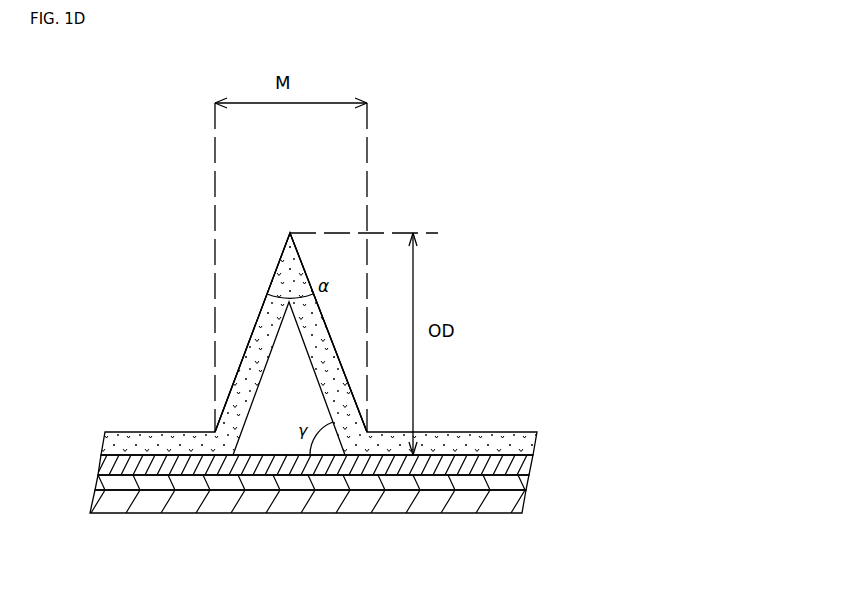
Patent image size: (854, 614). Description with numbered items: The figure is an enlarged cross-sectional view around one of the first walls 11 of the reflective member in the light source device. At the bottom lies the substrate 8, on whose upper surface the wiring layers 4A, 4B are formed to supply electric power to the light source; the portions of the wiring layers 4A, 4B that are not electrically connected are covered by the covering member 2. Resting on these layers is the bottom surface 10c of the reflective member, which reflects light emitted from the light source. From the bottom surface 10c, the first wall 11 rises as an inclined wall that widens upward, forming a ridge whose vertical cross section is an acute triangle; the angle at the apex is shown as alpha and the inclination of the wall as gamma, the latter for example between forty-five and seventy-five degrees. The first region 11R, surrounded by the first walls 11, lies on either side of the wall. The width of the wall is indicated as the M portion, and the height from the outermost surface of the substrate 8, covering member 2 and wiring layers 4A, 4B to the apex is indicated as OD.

The bottom surface 10c is at (190, 432).
The first wall 11 is at (243, 355).
The first region 11R is at (175, 317).
The covering member 2 is at (515, 468).
The wiring layer 4A is at (400, 483).
The wiring layer 4B is at (312, 525).
The substrate 8 is at (238, 498).